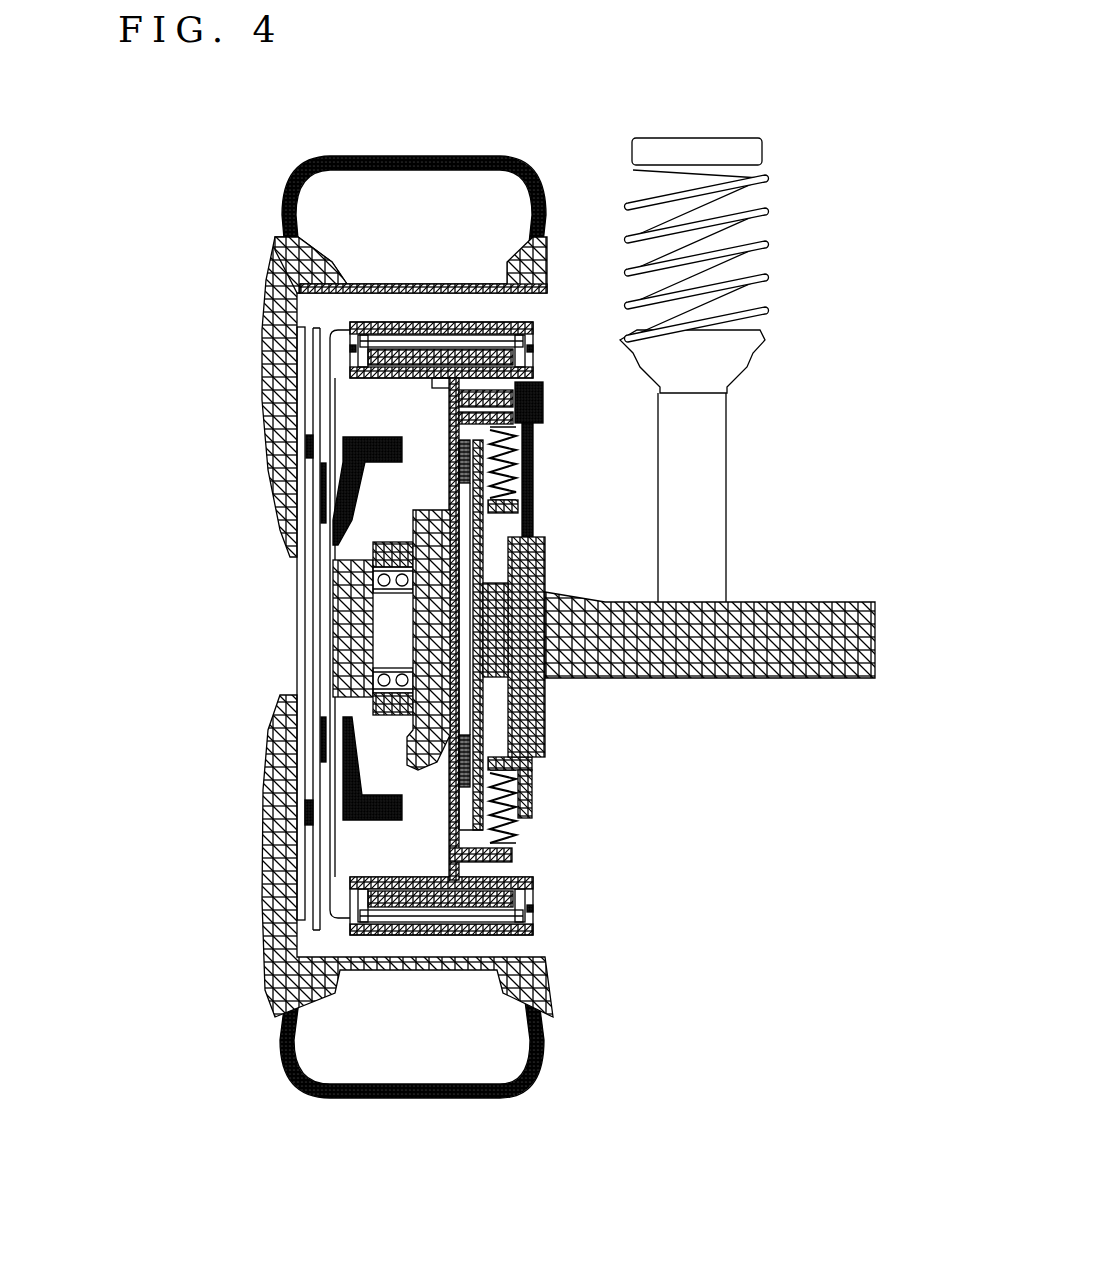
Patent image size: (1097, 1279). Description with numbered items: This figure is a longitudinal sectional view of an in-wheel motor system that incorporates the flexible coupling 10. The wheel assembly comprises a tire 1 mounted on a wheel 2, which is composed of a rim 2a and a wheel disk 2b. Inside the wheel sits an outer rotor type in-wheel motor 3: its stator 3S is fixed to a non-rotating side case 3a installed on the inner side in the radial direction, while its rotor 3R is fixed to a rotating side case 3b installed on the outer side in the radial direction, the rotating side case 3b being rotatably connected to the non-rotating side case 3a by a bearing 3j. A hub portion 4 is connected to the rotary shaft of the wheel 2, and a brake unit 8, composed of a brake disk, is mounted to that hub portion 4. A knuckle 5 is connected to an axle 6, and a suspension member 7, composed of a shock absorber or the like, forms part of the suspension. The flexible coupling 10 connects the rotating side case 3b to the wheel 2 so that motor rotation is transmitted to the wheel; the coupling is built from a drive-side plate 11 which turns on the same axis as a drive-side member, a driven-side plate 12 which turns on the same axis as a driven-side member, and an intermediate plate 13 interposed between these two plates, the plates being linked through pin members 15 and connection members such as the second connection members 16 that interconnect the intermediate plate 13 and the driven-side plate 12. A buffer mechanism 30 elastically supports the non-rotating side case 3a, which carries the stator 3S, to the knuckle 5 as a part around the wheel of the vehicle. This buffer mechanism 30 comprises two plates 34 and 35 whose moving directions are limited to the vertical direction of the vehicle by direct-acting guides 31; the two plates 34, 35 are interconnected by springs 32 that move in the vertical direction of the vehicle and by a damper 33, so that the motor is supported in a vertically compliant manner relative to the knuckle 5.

The tire 1 is at (487, 157).
The wheel 2 is at (267, 372).
The rim 2a is at (285, 237).
The wheel disk 2b is at (283, 530).
The in-wheel motor 3 is at (482, 565).
The stator 3S is at (420, 352).
The rotor 3R is at (453, 340).
The non-rotating side case 3a is at (540, 380).
The rotating side case 3b is at (505, 328).
The bearing 3j is at (535, 348).
The hub portion 4 is at (395, 640).
The knuckle 5 is at (427, 763).
The axle 6 is at (773, 602).
The suspension member 7 is at (755, 283).
The brake unit 8 is at (360, 800).
The flexible coupling 10 is at (277, 290).
The drive-side plate 11 is at (330, 630).
The driven-side plate 12 is at (298, 347).
The intermediate plate 13 is at (325, 517).
The pin members 15 is at (308, 498).
The second connection members 16 is at (300, 442).
The buffer mechanism 30 is at (532, 476).
The direct-acting guides 31 is at (450, 470).
The springs 32 is at (505, 505).
The damper 33 is at (548, 575).
The plate 34 is at (461, 478).
The plate 35 is at (462, 505).